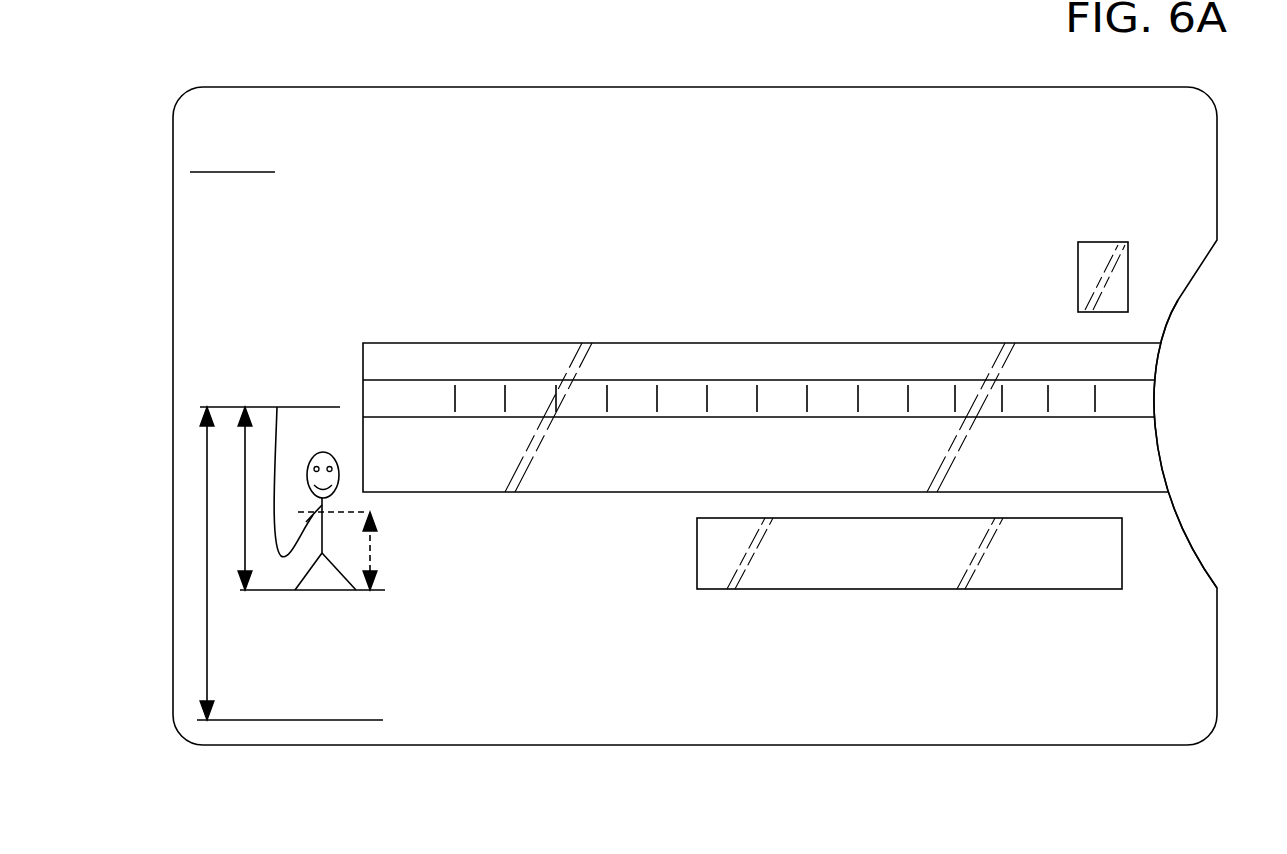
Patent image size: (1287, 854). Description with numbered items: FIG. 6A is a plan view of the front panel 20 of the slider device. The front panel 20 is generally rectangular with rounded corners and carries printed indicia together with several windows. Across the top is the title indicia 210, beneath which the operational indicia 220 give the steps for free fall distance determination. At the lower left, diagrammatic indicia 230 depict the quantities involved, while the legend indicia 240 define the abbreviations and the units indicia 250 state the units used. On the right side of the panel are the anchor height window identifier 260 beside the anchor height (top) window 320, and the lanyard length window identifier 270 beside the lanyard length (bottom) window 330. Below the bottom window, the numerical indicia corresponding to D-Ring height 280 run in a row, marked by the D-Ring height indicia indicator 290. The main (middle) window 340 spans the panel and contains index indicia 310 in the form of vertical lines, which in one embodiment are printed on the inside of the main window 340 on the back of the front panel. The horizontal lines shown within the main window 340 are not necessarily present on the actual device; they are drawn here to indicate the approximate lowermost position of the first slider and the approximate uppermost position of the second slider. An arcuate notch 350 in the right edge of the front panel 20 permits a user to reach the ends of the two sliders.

The front panel 20 is at (930, 84).
The title indicia 210 is at (425, 130).
The operational indicia 220 is at (188, 158).
The diagrammatic indicia 230 is at (188, 512).
The legend indicia 240 is at (437, 582).
The units indicia 250 is at (982, 706).
The anchor height window identifier 260 is at (1158, 258).
The lanyard length window identifier 270 is at (1150, 551).
The numerical indicia corresponding to D-Ring height 280 is at (896, 632).
The D-Ring height indicia indicator 290 is at (1143, 634).
The index indicia 310 is at (447, 397).
The anchor height window 320 is at (1098, 240).
The lanyard length window 330 is at (695, 542).
The main window 340 is at (853, 343).
The arcuate notch 350 is at (1178, 300).